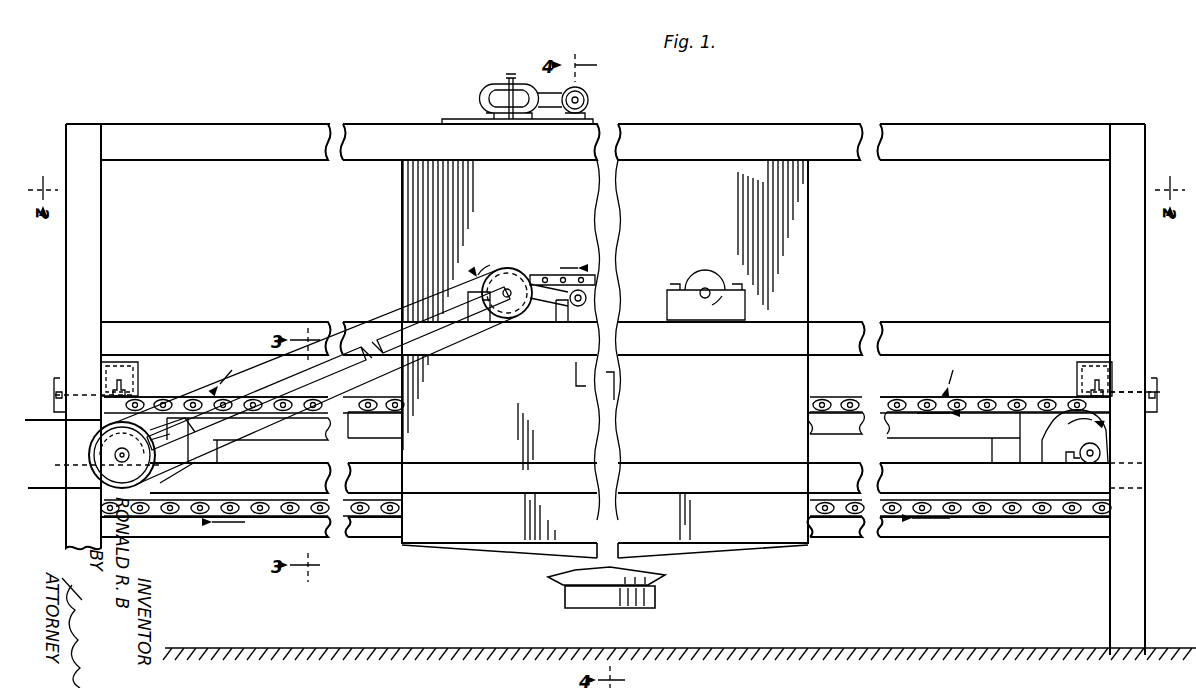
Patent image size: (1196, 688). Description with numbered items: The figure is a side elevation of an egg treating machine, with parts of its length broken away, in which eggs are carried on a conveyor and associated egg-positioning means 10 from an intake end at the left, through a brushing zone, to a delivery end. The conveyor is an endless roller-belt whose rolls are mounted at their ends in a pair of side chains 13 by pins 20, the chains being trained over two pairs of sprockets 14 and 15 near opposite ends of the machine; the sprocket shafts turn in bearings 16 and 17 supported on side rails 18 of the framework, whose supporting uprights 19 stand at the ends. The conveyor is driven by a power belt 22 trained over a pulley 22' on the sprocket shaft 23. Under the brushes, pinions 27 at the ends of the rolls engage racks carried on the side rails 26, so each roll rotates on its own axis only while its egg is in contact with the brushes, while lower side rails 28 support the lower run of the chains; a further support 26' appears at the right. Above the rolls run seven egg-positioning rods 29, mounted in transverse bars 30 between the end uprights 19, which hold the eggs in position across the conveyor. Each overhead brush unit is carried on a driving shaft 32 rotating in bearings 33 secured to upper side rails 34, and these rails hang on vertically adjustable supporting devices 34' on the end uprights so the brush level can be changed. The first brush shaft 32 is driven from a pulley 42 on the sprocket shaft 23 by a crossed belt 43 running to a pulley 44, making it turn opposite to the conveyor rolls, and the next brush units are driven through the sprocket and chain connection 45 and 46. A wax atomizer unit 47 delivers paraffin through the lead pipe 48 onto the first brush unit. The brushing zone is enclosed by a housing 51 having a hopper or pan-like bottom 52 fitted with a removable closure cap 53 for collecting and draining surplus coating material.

The conveyor and associated egg-positioning means 10 is at (587, 373).
The side chains 13 is at (278, 541).
The sprockets 14 is at (141, 400).
The sprockets 15 is at (1096, 437).
The bearings 16 is at (66, 468).
The bearings 17 is at (1072, 462).
The side rails 18 is at (452, 466).
The uprights 19 is at (66, 262).
The pins 20 is at (826, 412).
The power belt 22 is at (61, 410).
The pulley 22' is at (184, 427).
The sprocket shaft 23 is at (100, 455).
The side rails 26 is at (393, 423).
The support 26' is at (998, 437).
The pinions 27 is at (172, 506).
The lower side rails 28 is at (382, 536).
The rods 29 is at (170, 397).
The transverse bars 30 is at (56, 380).
The driving shaft 32 is at (532, 278).
The bearings 33 is at (468, 313).
The upper side rails 34 is at (605, 322).
The vertically adjustable supporting devices 34' is at (1072, 379).
The pulley 42 is at (112, 488).
The crossed belt 43 is at (283, 384).
The pulley 44 is at (503, 268).
The sprocket and chain connection 45 is at (517, 322).
The sprocket and chain connection 46 is at (578, 272).
The wax atomizer unit 47 is at (483, 96).
The lead pipe 48 is at (511, 74).
The housing 51 is at (808, 222).
The hopper or pan-like bottom 52 is at (706, 552).
The removable closure cap 53 is at (656, 592).